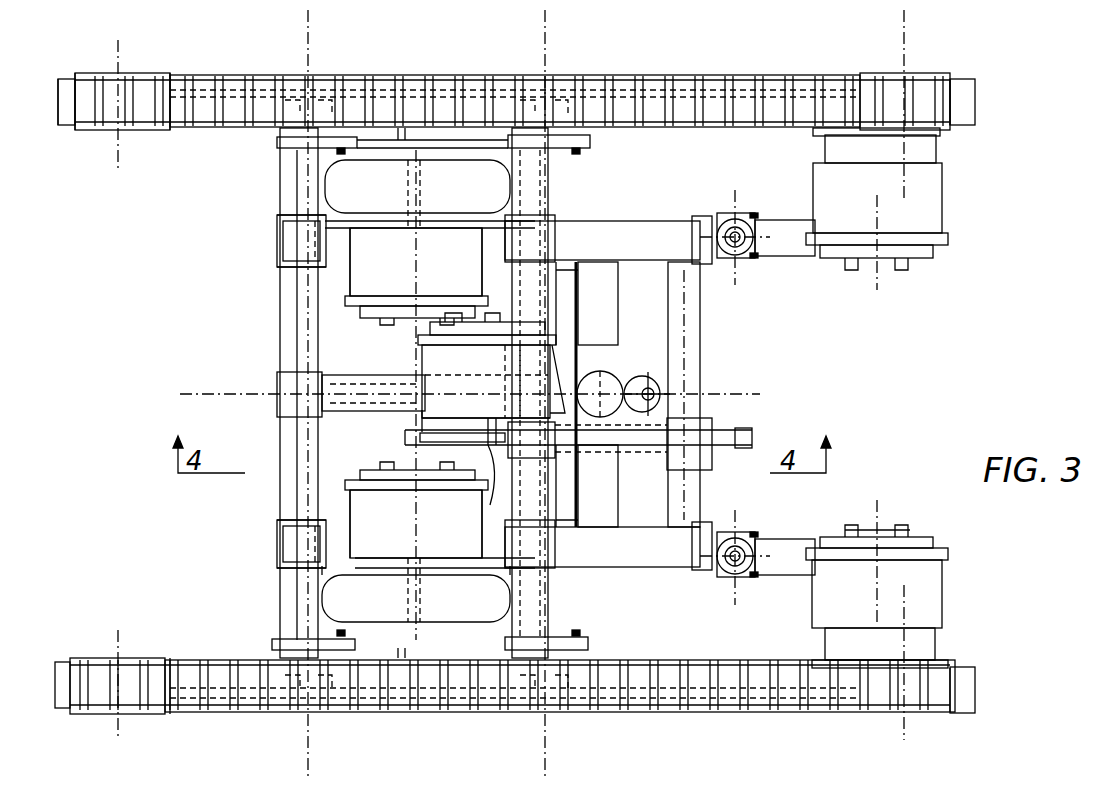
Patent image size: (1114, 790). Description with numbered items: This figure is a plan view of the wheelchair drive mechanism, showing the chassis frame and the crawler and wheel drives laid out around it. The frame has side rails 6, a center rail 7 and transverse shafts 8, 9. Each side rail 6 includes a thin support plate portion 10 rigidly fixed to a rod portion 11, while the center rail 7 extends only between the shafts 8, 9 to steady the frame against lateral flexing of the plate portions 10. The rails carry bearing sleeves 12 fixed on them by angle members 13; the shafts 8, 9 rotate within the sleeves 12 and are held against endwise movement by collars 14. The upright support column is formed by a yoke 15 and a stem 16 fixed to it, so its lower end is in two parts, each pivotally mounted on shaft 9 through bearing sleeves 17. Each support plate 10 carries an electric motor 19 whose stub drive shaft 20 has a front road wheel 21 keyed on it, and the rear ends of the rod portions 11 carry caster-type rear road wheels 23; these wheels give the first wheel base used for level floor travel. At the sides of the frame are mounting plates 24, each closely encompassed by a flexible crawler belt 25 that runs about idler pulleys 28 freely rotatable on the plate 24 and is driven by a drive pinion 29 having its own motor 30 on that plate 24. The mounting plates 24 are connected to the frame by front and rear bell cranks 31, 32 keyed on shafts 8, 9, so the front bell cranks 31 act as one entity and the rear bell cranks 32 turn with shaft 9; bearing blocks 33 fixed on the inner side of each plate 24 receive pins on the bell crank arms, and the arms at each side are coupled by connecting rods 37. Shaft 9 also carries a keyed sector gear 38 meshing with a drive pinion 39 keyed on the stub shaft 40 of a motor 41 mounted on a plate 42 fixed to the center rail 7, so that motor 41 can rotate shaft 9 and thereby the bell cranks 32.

The side rail 6 is at (625, 208).
The center rail 7 is at (345, 385).
The transverse shaft 8 is at (285, 318).
The transverse shaft 9 is at (535, 608).
The support plate portion 10 is at (388, 230).
The rod portion 11 is at (615, 240).
The bearing sleeve 12 is at (280, 238).
The angle member 13 is at (290, 250).
The collar 14 is at (280, 220).
The yoke 15 is at (600, 316).
The stem 16 is at (608, 382).
The bearing sleeve 17 is at (570, 300).
The electric motor 19 is at (416, 393).
The stub drive shaft 20 is at (420, 215).
The front road wheel 21 is at (416, 391).
The rear road wheel 23 is at (770, 255).
The mounting plate 24 is at (622, 85).
The crawler belt 25 is at (745, 127).
The idler pulley 28 is at (112, 130).
The drive pinion 29 is at (815, 130).
The motor 30 is at (935, 210).
The front bell crank 31 is at (277, 142).
The rear bell crank 32 is at (590, 143).
The bearing block 33 is at (565, 695).
The connecting rod 37 is at (450, 145).
The sector gear 38 is at (452, 437).
The drive pinion 39 is at (490, 445).
The stub shaft 40 is at (410, 425).
The motor 41 is at (491, 365).
The plate 42 is at (420, 410).